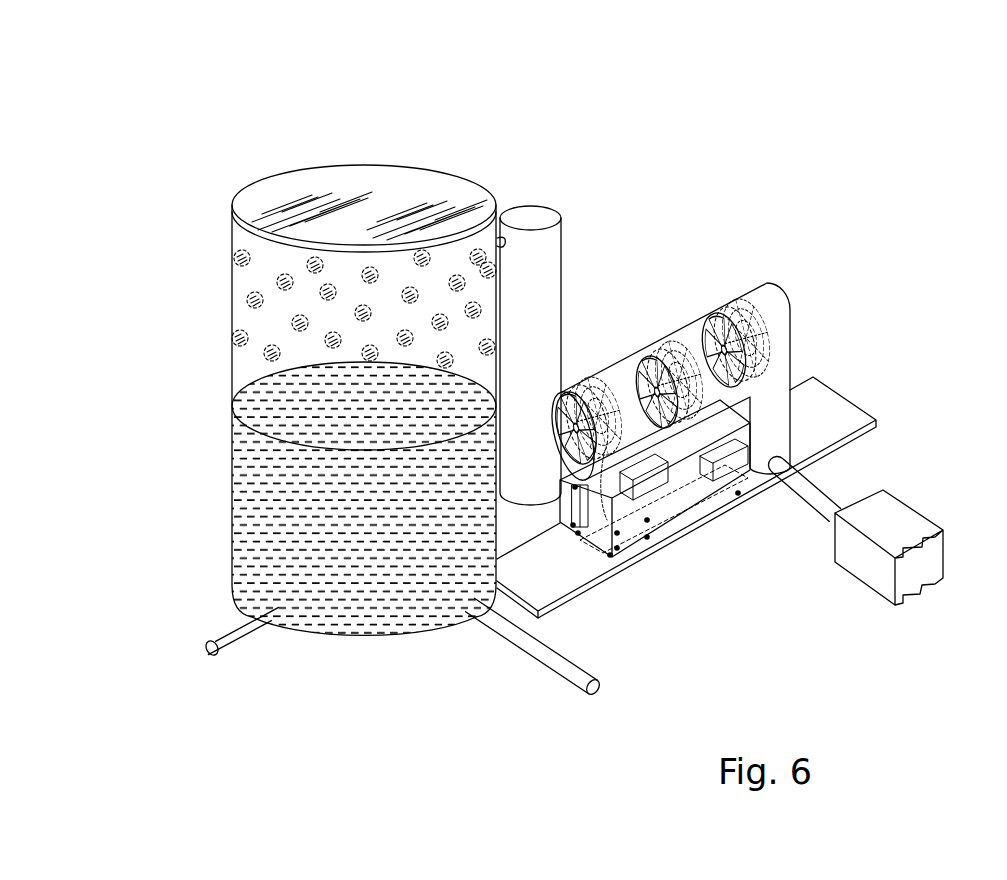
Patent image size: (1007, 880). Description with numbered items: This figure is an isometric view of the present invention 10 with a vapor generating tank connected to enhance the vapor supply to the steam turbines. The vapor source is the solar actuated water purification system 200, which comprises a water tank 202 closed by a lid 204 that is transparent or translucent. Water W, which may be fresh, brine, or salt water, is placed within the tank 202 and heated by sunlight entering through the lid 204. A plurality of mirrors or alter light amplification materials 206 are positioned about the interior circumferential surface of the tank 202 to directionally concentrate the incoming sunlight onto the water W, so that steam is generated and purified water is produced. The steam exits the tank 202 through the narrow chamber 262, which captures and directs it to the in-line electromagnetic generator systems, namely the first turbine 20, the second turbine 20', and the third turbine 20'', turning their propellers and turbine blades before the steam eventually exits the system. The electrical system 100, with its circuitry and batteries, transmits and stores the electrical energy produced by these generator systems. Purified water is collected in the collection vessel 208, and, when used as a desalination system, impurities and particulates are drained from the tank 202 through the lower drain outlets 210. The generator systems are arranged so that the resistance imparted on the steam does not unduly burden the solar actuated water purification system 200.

The present invention 10 is at (852, 97).
The solar actuated water purification system 200 is at (230, 185).
The water tank 202 is at (232, 363).
The lid 204 is at (393, 188).
The mirrors or alter light amplification materials 206 is at (233, 330).
The water W is at (232, 398).
The lower drain outlets 210 is at (212, 640).
The narrow chamber 262 is at (562, 278).
The electrical system 100 is at (687, 532).
The electromagnetic generator system 20 is at (597, 379).
The second electromagnetic generator system 20' is at (669, 347).
The third electromagnetic generator system 20'' is at (737, 313).
The collection vessel 208 is at (900, 498).